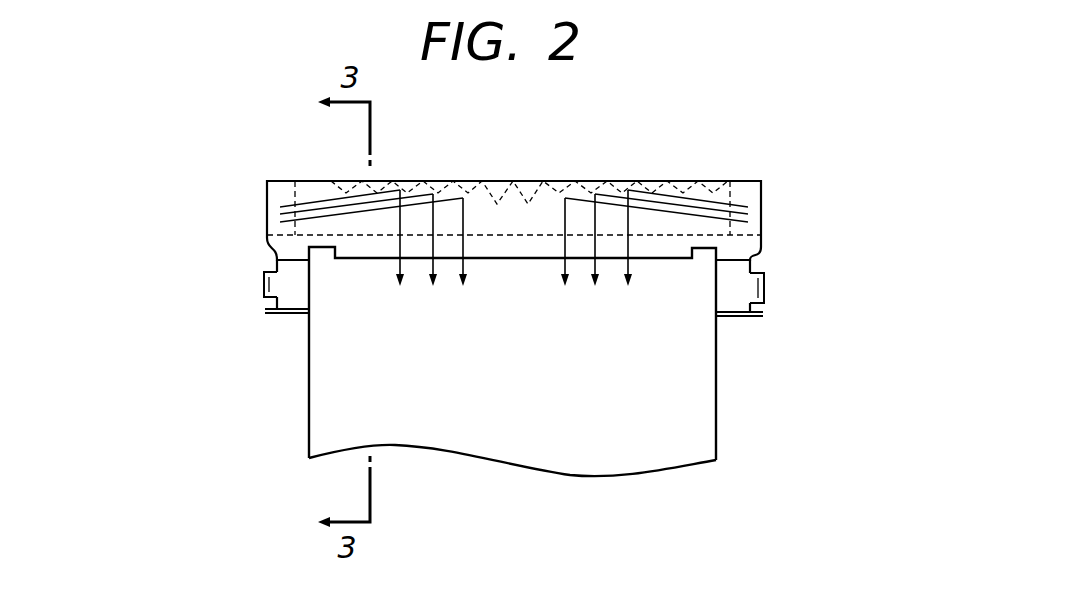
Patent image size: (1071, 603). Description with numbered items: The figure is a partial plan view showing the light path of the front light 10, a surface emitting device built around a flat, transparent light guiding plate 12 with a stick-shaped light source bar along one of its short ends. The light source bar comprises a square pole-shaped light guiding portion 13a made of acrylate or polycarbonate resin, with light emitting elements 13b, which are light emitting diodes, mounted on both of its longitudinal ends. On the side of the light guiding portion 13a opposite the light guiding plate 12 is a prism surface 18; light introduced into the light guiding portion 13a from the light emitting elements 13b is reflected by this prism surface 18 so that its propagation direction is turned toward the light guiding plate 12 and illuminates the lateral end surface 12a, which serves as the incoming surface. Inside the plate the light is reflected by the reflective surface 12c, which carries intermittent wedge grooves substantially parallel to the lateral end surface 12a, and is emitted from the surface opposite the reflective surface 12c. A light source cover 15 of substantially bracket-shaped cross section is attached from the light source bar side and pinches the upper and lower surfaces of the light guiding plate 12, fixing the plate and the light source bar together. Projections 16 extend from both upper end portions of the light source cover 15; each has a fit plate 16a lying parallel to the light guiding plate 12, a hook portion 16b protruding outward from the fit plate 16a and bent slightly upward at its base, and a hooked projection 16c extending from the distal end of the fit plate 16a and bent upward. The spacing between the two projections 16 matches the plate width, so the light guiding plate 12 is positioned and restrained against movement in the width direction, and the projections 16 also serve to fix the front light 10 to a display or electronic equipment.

The front light 10 is at (690, 155).
The light guiding plate 12 is at (541, 478).
The lateral end surface 12a is at (493, 234).
The reflective surface 12c is at (678, 453).
The light guiding portion 13a is at (725, 180).
The light emitting element 13b is at (278, 195).
The light source cover 15 is at (310, 176).
The projection 16 is at (293, 323).
The fit plate 16a is at (283, 267).
The hook portion 16b is at (265, 282).
The hooked projection 16c is at (265, 311).
The prism surface 18 is at (532, 183).